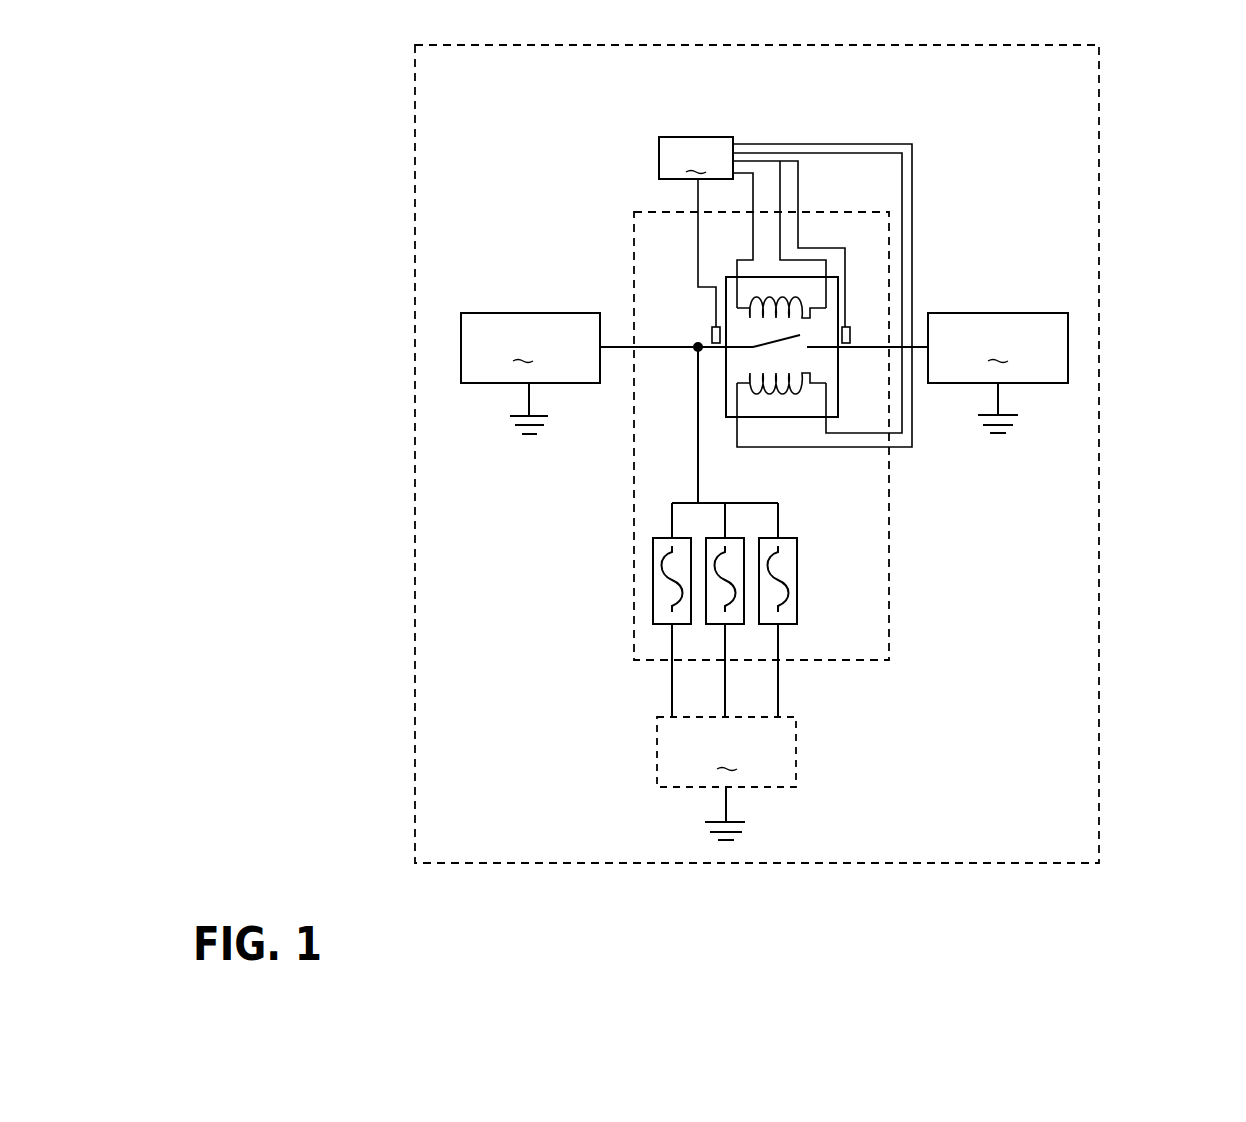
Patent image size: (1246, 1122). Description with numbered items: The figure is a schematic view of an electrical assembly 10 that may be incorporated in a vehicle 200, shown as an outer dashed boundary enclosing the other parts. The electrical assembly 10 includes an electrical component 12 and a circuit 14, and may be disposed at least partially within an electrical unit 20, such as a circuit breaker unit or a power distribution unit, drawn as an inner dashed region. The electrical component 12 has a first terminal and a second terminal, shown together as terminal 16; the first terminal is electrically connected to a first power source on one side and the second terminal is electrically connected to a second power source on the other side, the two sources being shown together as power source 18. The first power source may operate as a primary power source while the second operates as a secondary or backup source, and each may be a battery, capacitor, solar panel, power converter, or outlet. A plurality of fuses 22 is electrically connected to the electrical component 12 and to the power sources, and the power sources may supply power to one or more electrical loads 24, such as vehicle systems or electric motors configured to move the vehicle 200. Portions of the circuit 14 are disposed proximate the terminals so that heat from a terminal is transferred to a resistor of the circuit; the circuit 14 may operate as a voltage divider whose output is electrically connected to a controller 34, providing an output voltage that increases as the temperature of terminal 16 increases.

The electrical assembly 10 is at (579, 185).
The electrical component 12 is at (840, 290).
The circuit 14 is at (953, 245).
The terminal 16 is at (920, 478).
The power source 18 is at (488, 298).
The electrical unit 20 is at (812, 212).
The fuses 22 is at (638, 590).
The electrical load 24 is at (726, 778).
The controller 34 is at (785, 292).
The vehicle 200 is at (1099, 217).